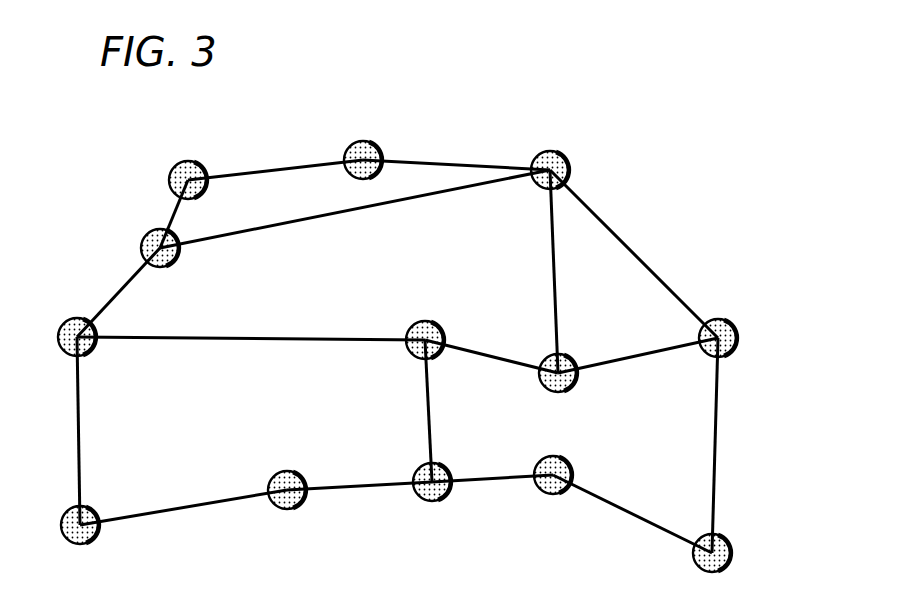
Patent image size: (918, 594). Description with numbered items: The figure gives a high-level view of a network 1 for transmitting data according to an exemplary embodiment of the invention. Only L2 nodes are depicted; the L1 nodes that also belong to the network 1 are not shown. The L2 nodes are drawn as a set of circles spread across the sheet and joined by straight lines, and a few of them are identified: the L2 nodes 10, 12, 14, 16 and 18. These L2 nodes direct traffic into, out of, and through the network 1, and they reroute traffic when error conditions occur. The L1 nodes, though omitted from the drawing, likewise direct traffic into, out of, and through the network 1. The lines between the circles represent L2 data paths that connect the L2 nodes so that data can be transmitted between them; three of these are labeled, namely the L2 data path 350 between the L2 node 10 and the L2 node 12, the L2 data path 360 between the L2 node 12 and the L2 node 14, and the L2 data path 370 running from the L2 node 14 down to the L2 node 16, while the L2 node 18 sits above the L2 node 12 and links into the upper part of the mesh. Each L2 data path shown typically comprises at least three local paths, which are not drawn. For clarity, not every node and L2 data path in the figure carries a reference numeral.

The network 1 is at (614, 133).
The L2 node 10 is at (287, 471).
The L2 node 12 is at (432, 502).
The L2 node 14 is at (555, 495).
The L2 node 16 is at (734, 553).
The L2 node 18 is at (424, 321).
The L2 data path 350 is at (360, 489).
The L2 data path 360 is at (498, 475).
The L2 data path 370 is at (636, 507).